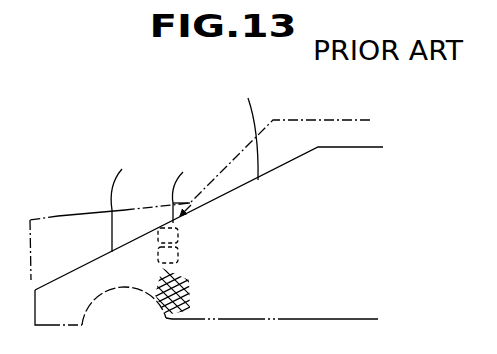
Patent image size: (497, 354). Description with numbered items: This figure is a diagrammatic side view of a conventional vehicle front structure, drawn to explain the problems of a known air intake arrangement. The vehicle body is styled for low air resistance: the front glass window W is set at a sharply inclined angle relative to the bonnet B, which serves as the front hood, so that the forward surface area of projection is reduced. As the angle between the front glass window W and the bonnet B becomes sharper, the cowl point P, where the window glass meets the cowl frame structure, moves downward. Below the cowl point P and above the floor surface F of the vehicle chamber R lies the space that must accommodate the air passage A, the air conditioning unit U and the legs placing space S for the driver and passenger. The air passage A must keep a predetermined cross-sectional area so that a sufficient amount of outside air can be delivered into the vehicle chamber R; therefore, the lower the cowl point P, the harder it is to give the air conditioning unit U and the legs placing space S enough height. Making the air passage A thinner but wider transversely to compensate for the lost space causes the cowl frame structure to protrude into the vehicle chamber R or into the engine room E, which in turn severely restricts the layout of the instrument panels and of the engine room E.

The bonnet B is at (98, 210).
The cowl point P is at (181, 186).
The front glass window W is at (231, 160).
The air passage A is at (182, 234).
The air conditioning unit U is at (182, 253).
The legs placing space S is at (197, 283).
The floor surface F is at (186, 318).
The engine room E is at (130, 287).
The vehicle chamber R is at (318, 262).